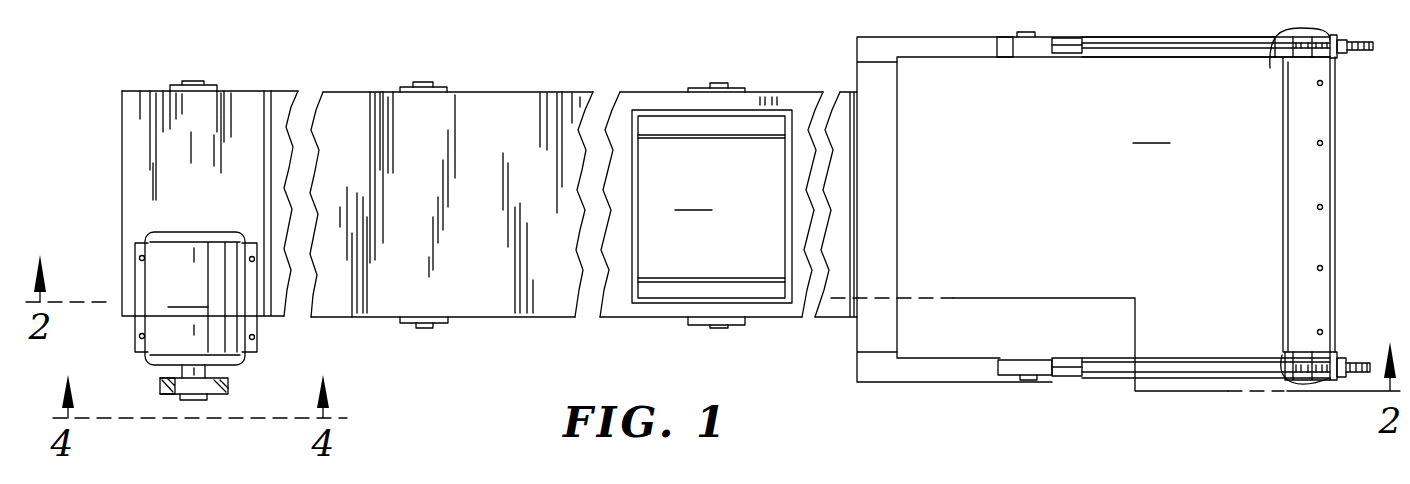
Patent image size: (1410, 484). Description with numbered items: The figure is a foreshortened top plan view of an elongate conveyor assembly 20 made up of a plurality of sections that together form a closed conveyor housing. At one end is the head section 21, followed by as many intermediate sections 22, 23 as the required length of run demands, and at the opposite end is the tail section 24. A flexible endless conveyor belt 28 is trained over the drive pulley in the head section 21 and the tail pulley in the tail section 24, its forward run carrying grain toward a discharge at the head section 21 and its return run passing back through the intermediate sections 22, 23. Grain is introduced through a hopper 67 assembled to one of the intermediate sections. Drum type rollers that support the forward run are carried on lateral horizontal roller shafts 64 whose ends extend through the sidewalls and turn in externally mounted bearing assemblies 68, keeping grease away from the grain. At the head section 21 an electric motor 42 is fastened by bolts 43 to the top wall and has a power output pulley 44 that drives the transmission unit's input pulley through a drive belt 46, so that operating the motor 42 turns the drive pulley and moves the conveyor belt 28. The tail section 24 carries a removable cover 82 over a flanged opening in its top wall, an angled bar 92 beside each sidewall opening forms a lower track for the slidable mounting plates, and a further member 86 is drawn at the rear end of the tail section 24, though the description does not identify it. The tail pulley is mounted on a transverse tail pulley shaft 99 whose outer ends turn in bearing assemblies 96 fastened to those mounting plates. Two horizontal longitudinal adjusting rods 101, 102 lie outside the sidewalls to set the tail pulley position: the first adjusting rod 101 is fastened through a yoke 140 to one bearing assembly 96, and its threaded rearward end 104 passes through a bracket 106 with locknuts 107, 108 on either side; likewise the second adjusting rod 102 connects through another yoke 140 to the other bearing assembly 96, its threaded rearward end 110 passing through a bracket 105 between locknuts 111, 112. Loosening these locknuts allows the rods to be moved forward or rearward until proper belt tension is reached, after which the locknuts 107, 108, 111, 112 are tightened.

The conveyor assembly 20 is at (637, 91).
The head section 21 is at (237, 118).
The intermediate section 22 is at (490, 113).
The intermediate section 23 is at (677, 103).
The tail section 24 is at (867, 83).
The conveyor belt 28 is at (712, 206).
The electric motor 42 is at (195, 298).
The bolts 43 is at (137, 332).
The power output pulley 44 is at (170, 390).
The drive belt 46 is at (228, 386).
The roller shafts 64 is at (422, 328).
The hopper 67 is at (650, 300).
The bearing assemblies 68 is at (443, 323).
The removable cover 82 is at (1090, 224).
The end bar 86 is at (1330, 188).
The angled bar 92 is at (927, 373).
The bearing assemblies 96 is at (1007, 48).
The tail pulley shaft 99 is at (1027, 37).
The adjusting rod 101 is at (1203, 358).
The adjusting rod 102 is at (1208, 47).
The rearward end 104 is at (1358, 362).
The bracket 105 is at (1320, 62).
The bracket 106 is at (1312, 348).
The locknut 107 is at (1283, 357).
The locknut 108 is at (1345, 358).
The rearward end 110 is at (1367, 52).
The locknut 111 is at (1342, 58).
The locknut 112 is at (1275, 55).
The yoke 140 is at (1070, 52).